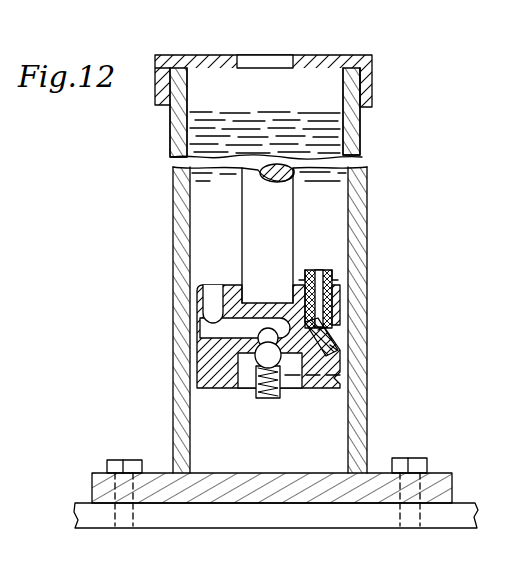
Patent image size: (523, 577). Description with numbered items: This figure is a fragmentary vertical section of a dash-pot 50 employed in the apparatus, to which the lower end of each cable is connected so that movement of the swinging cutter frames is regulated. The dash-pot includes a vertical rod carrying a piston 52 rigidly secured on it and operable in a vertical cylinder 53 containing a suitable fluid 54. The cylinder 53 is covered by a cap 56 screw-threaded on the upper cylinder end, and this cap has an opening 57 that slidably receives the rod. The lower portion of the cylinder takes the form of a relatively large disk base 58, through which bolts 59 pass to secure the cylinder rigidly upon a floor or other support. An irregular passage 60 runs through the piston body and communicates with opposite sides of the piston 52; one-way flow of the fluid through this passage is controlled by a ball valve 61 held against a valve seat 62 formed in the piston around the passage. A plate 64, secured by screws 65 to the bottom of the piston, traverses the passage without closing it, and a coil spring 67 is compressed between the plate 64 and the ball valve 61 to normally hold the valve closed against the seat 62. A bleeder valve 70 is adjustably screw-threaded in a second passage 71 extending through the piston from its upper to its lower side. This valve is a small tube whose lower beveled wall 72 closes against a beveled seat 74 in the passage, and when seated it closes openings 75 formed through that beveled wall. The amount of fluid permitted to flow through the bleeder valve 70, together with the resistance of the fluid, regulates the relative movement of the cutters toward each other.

The dash-pot 50 is at (172, 225).
The piston 52 is at (205, 356).
The vertical cylinder 53 is at (182, 302).
The fluid 54 is at (320, 110).
The cap 56 is at (367, 56).
The opening 57 is at (296, 56).
The disk base 58 is at (338, 495).
The bolts 59 is at (121, 460).
The irregular passage 60 is at (228, 323).
The ball valve 61 is at (256, 391).
The valve seat 62 is at (290, 333).
The plate 64 is at (292, 382).
The screws 65 is at (272, 393).
The coil spring 67 is at (340, 375).
The bleeder valve 70 is at (316, 270).
The passage 71 is at (332, 305).
The beveled wall 72 is at (332, 347).
The beveled seat 74 is at (328, 350).
The openings 75 is at (324, 340).